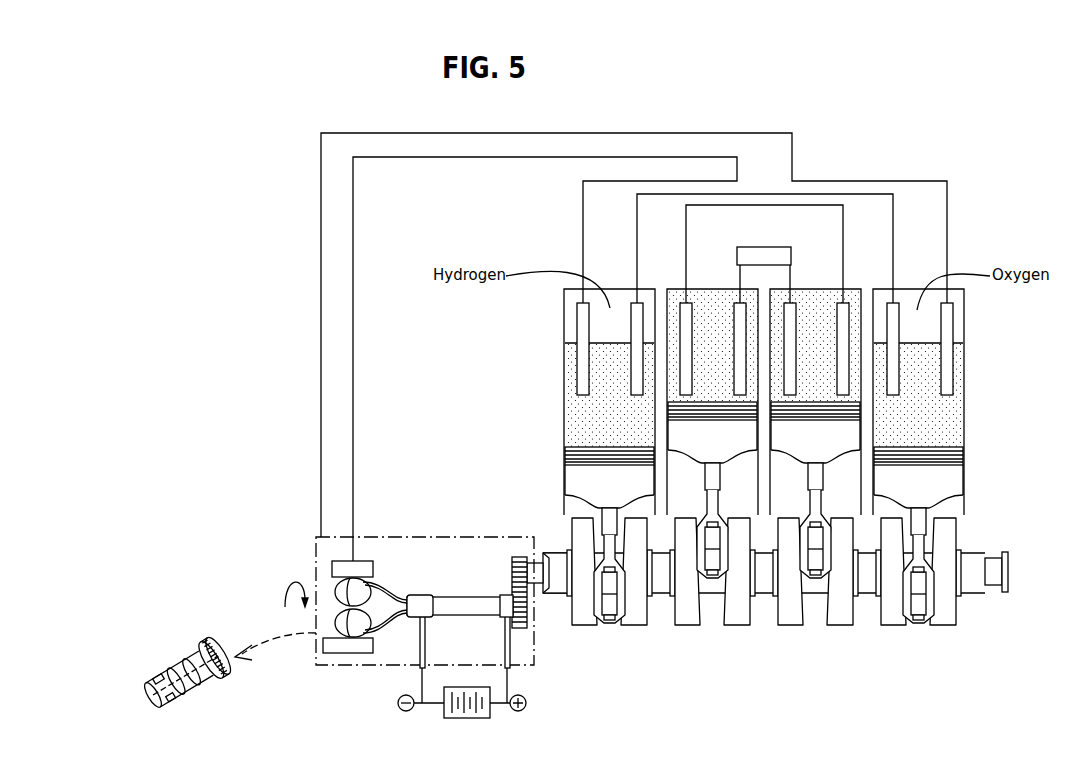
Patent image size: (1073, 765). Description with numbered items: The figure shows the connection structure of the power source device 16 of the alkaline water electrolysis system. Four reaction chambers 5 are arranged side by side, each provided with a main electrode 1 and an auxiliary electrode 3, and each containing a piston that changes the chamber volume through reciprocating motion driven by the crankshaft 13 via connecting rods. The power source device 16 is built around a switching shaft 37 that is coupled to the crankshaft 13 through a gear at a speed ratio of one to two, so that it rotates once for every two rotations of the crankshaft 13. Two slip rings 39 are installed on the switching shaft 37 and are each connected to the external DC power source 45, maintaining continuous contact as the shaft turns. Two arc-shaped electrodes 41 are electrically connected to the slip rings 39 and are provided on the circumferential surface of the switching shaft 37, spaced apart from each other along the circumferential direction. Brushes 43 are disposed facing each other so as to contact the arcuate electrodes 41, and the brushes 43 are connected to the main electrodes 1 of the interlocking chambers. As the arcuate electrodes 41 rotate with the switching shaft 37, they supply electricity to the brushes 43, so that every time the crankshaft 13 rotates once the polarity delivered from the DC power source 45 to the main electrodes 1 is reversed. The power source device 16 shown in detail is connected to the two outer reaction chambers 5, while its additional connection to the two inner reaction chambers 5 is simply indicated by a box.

The main electrode 1 is at (583, 311).
The auxiliary electrode 3 is at (638, 335).
The reaction chamber 5 is at (964, 333).
The crankshaft 13 is at (557, 585).
The power source device 16 is at (768, 247).
The switching shaft 37 is at (452, 594).
The slip ring 39 is at (425, 600).
The arc-shaped electrode 41 is at (371, 582).
The brush 43 is at (366, 561).
The external DC power source 45 is at (472, 687).